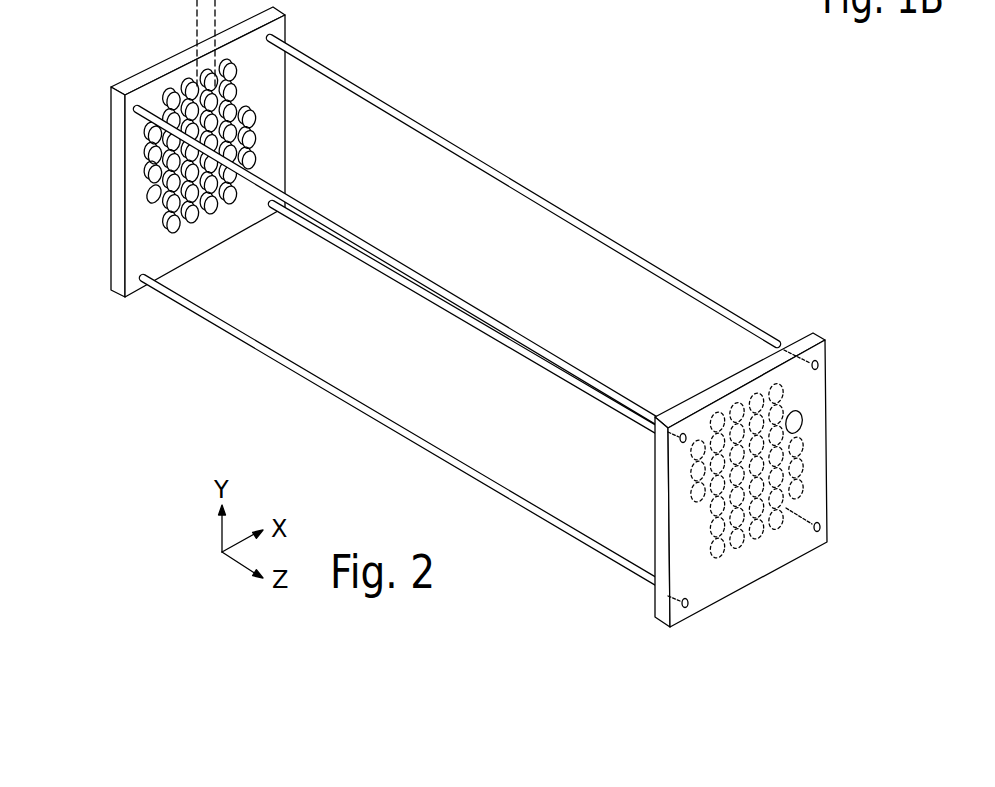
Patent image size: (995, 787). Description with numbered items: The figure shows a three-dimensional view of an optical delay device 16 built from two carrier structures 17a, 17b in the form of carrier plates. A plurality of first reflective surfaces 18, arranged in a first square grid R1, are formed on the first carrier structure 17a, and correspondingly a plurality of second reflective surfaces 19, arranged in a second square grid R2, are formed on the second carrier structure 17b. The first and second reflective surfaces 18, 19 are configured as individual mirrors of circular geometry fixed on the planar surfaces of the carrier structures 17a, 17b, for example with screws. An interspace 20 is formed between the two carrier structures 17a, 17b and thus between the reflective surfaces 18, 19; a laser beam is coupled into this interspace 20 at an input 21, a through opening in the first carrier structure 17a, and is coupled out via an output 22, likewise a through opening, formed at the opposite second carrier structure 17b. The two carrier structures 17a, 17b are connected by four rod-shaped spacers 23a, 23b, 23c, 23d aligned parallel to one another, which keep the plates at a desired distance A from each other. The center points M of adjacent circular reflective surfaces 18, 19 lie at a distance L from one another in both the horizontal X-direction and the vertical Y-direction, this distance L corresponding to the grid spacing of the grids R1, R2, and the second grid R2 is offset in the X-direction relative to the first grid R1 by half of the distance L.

The optical delay device 16 is at (684, 245).
The first carrier structure 17a is at (132, 146).
The second carrier structure 17b is at (818, 471).
The first reflective surfaces 18 is at (237, 118).
The second reflective surfaces 19 is at (775, 384).
The interspace 20 is at (459, 370).
The input 21 is at (149, 195).
The output 22 is at (803, 428).
The rod-shaped spacer 23a is at (491, 165).
The rod-shaped spacer 23b is at (437, 300).
The rod-shaped spacer 23c is at (281, 355).
The rod-shaped spacer 23d is at (328, 226).
The distance A is at (645, 608).
The distance L is at (242, 12).
The center points M is at (236, 68).
The first square grid R1 is at (160, 90).
The second square grid R2 is at (681, 519).